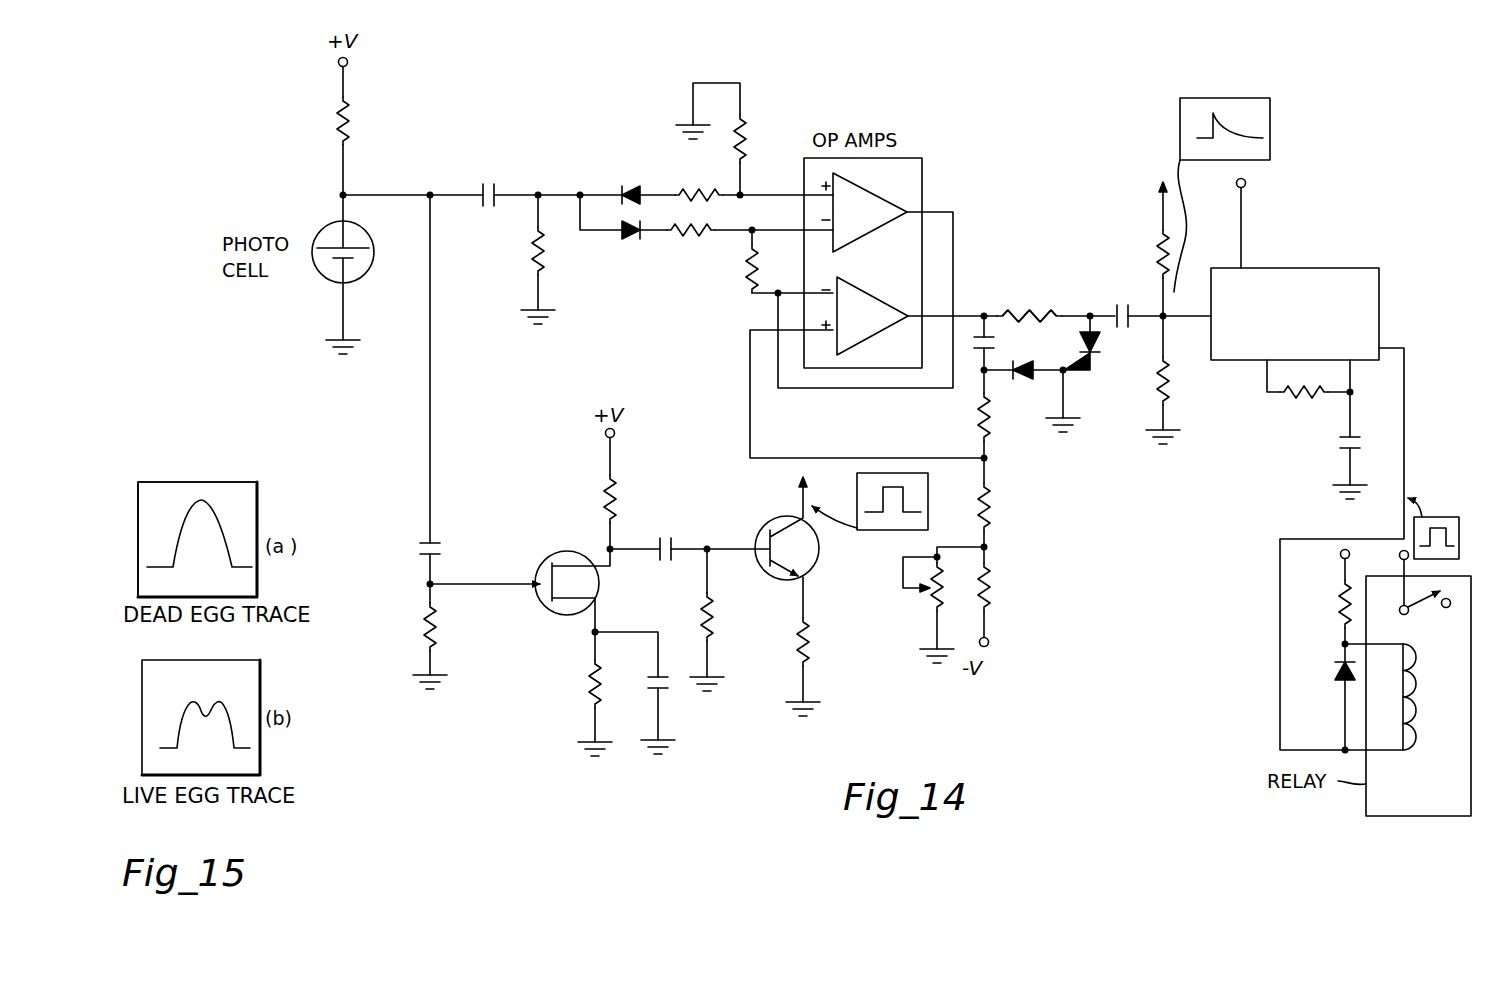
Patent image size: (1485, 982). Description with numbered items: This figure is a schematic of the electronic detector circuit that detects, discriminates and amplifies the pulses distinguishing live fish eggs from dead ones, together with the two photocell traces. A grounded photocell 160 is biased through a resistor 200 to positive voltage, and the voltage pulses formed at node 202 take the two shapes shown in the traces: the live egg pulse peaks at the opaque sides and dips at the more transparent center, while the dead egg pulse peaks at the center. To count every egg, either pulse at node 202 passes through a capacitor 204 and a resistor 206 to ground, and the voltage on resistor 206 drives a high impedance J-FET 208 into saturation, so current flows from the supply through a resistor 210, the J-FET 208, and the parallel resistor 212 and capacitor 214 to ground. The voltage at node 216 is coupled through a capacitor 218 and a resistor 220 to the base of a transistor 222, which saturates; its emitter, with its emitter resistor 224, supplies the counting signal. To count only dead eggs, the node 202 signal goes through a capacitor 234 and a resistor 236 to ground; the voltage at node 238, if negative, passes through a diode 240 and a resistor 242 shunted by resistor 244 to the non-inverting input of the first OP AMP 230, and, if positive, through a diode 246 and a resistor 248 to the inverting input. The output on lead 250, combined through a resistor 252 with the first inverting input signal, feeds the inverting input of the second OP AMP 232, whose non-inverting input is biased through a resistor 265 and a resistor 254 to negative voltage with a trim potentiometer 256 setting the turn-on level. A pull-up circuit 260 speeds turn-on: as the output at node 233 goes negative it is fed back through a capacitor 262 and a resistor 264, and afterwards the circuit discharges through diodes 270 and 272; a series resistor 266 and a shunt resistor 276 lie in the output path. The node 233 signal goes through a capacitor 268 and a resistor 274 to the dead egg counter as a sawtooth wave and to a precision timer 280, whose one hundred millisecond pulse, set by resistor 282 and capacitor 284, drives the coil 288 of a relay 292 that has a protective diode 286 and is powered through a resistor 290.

The photocell 160 is at (320, 233).
The resistor 200 is at (352, 98).
The node 202 is at (344, 193).
The capacitor 204 is at (431, 540).
The resistor 206 is at (420, 625).
The J-FET 208 is at (561, 614).
The resistor 210 is at (614, 502).
The resistor 212 is at (586, 686).
The capacitor 214 is at (670, 692).
The node 216 is at (616, 545).
The capacitor 218 is at (666, 538).
The resistor 220 is at (718, 613).
The transistor 222 is at (802, 567).
The resistor 224 is at (808, 655).
The first OP AMP 230 is at (880, 210).
The second OP AMP 232 is at (883, 307).
The node 233 is at (981, 320).
The capacitor 234 is at (498, 158).
The resistor 236 is at (532, 247).
The node 238 is at (536, 190).
The diode 240 is at (642, 166).
The resistor 242 is at (728, 186).
The resistor 244 is at (749, 142).
The diode 246 is at (626, 238).
The resistor 248 is at (714, 238).
The lead 250 is at (955, 233).
The resistor 252 is at (746, 288).
The resistor 254 is at (996, 588).
The trim potentiometer 256 is at (923, 598).
The pull-up circuit 260 is at (1015, 415).
The capacitor 262 is at (1007, 300).
The resistor 264 is at (978, 418).
The resistor 265 is at (995, 500).
The resistor 266 is at (1030, 307).
The capacitor 268 is at (1128, 306).
The diode 270 is at (1095, 350).
The diode 272 is at (1052, 342).
The resistor 274 is at (1160, 238).
The resistor 276 is at (1168, 382).
The precision timer 280 is at (1340, 242).
The resistor 282 is at (1304, 394).
The capacitor 284 is at (1345, 450).
The protective diode 286 is at (1340, 677).
The coil 288 is at (1418, 730).
The resistor 290 is at (1332, 598).
The relay 292 is at (1449, 608).